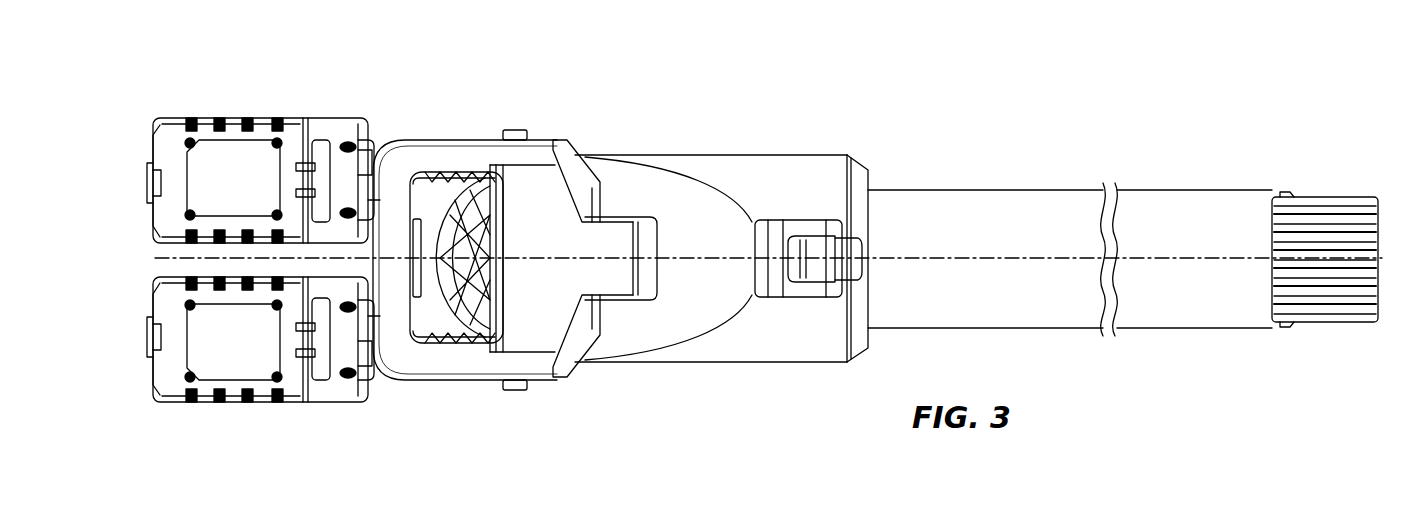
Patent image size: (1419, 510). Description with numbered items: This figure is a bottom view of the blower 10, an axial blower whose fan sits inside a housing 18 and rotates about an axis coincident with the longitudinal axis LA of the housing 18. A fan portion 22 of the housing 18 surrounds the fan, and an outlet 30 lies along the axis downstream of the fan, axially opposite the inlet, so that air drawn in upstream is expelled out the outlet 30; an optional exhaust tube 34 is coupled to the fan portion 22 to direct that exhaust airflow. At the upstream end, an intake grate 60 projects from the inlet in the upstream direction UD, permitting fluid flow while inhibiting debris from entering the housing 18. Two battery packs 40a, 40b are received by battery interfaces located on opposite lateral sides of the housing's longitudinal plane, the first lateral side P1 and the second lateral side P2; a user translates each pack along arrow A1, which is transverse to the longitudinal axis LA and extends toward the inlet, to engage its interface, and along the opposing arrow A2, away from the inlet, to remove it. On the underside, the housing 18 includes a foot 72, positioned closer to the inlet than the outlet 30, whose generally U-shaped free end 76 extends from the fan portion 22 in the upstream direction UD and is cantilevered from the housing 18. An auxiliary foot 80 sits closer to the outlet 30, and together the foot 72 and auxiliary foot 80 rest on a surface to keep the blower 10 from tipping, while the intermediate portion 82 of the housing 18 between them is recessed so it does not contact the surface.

The blower 10 is at (965, 226).
The housing 18 is at (638, 172).
The fan portion 22 is at (736, 229).
The outlet 30 is at (893, 168).
The exhaust tube 34 is at (987, 197).
The battery pack 40a is at (195, 118).
The battery pack 40b is at (175, 387).
The intake grate 60 is at (470, 290).
The foot 72 is at (415, 150).
The free end 76 is at (350, 200).
The auxiliary foot 80 is at (780, 290).
The intermediate portion 82 is at (676, 230).
The deployment direction DD is at (870, 58).
The upstream direction UD is at (817, 80).
The arrow A1 is at (143, 241).
The arrow A2 is at (150, 275).
The first lateral side P1 is at (1150, 168).
The second lateral side P2 is at (1150, 348).
The longitudinal axis LA is at (1247, 258).